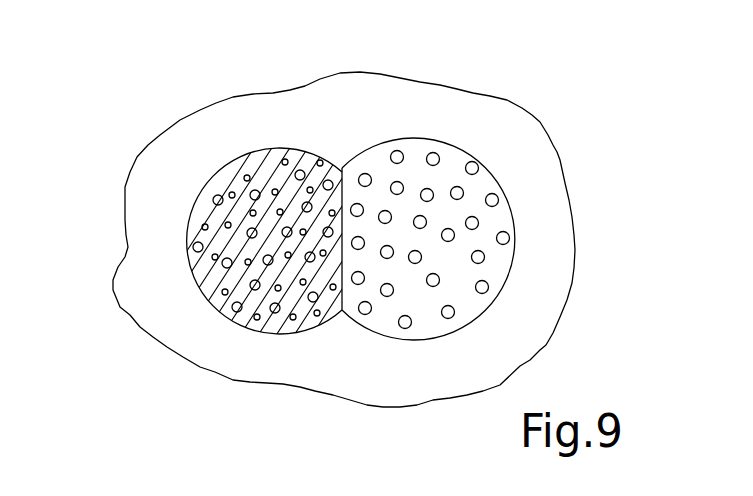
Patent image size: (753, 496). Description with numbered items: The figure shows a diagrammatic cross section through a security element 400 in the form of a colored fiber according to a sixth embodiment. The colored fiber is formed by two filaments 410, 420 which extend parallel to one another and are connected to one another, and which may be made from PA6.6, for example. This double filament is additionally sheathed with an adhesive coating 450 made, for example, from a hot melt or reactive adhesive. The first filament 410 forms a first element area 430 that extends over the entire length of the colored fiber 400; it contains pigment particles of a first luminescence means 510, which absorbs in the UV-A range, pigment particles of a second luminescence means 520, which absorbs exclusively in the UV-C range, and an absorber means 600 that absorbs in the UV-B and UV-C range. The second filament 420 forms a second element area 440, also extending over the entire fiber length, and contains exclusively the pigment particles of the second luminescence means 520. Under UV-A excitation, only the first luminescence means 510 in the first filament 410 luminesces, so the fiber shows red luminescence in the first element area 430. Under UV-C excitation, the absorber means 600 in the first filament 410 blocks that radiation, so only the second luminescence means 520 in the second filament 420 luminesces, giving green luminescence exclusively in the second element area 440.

The security element 400 is at (562, 77).
The first filament 410 is at (193, 202).
The second filament 420 is at (447, 145).
The first element area 430 is at (259, 143).
The second element area 440 is at (522, 229).
The adhesive coating 450 is at (528, 147).
The first luminescence means 510 is at (193, 273).
The second luminescence means 520 is at (195, 248).
The absorber means 600 is at (210, 303).